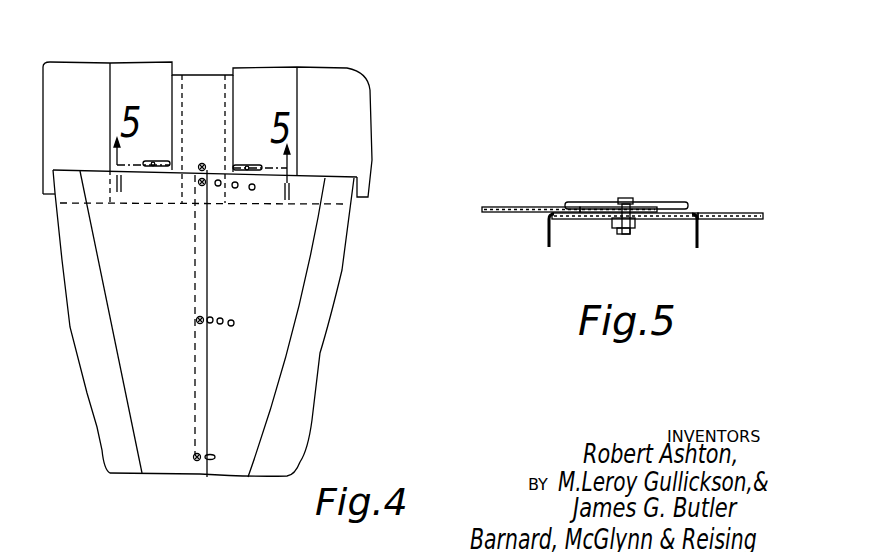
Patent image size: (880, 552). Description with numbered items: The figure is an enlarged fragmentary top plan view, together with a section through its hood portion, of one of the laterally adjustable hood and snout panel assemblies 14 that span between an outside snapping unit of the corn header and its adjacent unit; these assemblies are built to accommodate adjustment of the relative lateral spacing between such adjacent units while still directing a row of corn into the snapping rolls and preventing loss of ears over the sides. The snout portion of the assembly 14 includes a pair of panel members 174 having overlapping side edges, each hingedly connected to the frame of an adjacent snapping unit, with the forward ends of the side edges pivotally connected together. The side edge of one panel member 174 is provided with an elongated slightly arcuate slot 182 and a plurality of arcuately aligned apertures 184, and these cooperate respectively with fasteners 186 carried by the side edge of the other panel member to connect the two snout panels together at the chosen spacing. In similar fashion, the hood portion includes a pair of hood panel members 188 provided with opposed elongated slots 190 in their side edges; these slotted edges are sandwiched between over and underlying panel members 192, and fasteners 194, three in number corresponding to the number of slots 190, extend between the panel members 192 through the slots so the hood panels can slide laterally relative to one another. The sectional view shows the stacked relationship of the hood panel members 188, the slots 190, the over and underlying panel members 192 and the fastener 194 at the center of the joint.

In FIG. 4, the hood and snout panel assembly 14 is at (341, 269).
In FIG. 4, the panel members 174 is at (318, 356).
In FIG. 4, the elongated slightly arcuate slot 182 is at (213, 455).
In FIG. 4, the arcuately aligned apertures 184 is at (252, 191).
In FIG. 4, the fasteners 186 is at (200, 186).
In FIG. 4, the hood panel members 188 is at (70, 73).
In FIG. 5, the hood panel members 188 is at (493, 206).
In FIG. 4, the elongated slots 190 is at (248, 163).
In FIG. 5, the elongated slots 190 is at (536, 207).
In FIG. 4, the over and underlying panel members 192 is at (218, 72).
In FIG. 5, the over and underlying panel members 192 is at (650, 203).
In FIG. 4, the fasteners 194 is at (202, 163).
In FIG. 5, the fasteners 194 is at (622, 198).